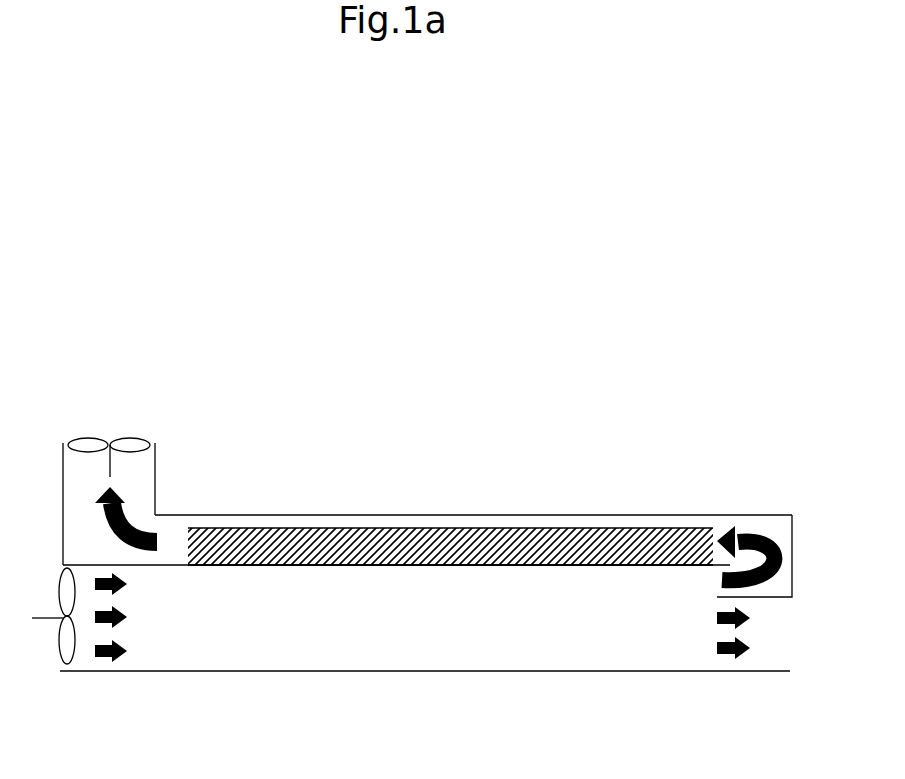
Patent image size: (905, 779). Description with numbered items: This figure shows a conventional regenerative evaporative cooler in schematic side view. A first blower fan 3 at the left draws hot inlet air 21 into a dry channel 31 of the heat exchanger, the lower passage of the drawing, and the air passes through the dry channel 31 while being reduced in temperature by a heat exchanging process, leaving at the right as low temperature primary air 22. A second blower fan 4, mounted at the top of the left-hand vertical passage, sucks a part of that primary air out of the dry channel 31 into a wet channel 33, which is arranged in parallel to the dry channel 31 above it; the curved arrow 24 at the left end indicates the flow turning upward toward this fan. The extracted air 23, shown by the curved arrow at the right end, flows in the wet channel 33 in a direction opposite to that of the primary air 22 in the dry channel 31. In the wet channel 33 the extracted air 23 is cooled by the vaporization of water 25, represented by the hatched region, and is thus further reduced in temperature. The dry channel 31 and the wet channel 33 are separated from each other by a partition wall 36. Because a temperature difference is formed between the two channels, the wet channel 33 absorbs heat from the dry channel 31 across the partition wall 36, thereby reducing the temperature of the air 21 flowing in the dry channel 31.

The first blower fan 3 is at (60, 655).
The second blower fan 4 is at (130, 441).
The hot inlet air 21 is at (123, 625).
The low temperature primary air 22 is at (747, 650).
The extracted air 23 is at (770, 547).
The upward air flow 24 is at (132, 523).
The water 25 is at (430, 530).
The dry channel 31 is at (280, 633).
The wet channel 33 is at (483, 516).
The partition wall 36 is at (442, 567).